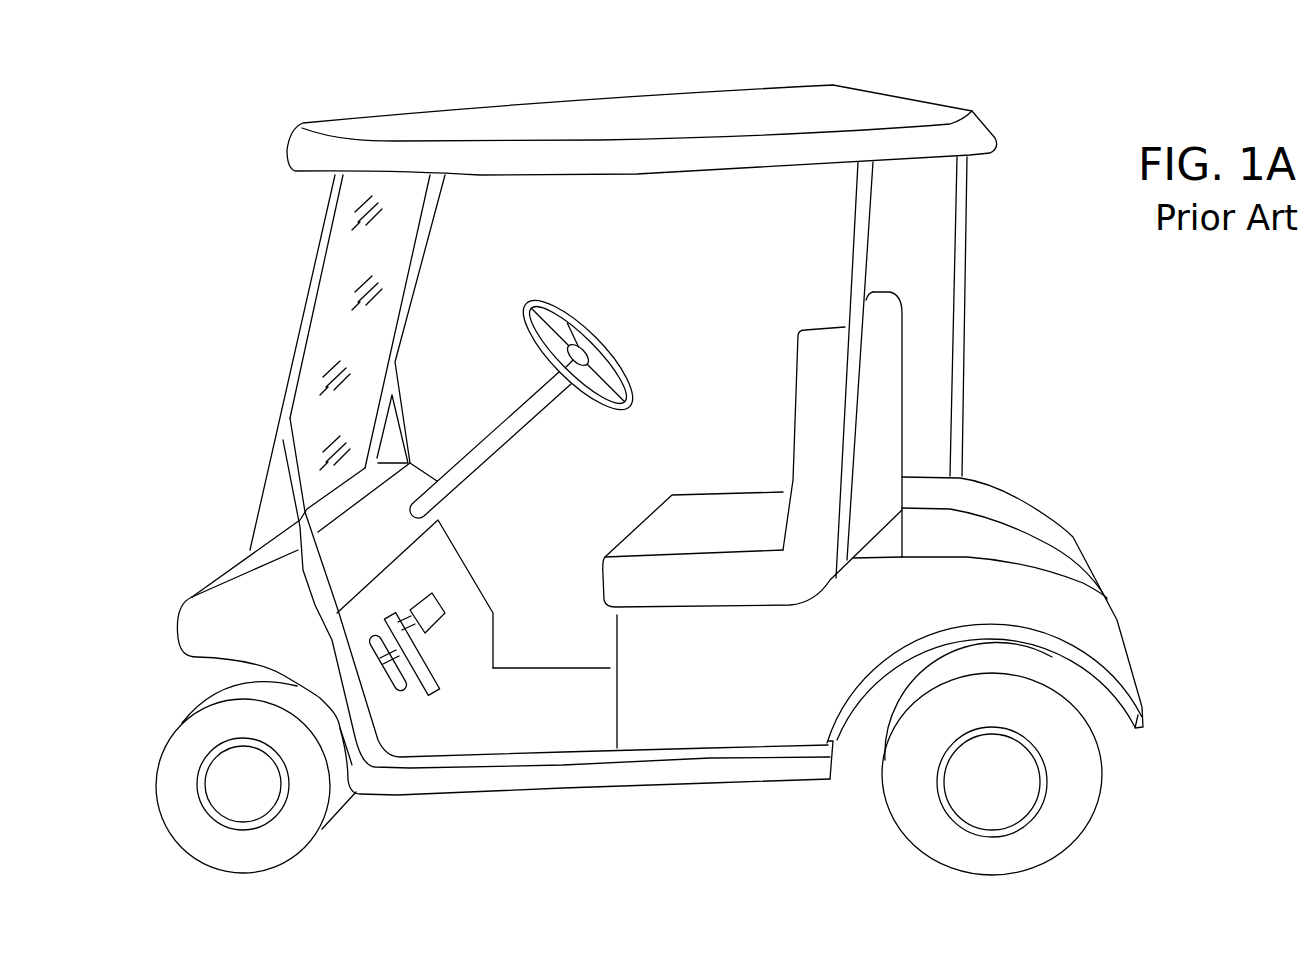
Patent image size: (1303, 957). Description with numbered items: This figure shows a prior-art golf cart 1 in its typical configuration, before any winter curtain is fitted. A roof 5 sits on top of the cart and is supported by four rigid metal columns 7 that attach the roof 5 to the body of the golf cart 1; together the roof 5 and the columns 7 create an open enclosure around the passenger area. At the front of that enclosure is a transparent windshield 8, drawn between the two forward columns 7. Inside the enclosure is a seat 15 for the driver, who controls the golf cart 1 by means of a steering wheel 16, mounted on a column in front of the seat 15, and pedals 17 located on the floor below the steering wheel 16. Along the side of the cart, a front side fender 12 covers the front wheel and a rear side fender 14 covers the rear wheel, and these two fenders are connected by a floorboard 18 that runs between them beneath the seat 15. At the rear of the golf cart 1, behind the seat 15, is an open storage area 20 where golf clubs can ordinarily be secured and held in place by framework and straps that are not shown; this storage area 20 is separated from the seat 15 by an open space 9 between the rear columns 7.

The golf cart 1 is at (262, 111).
The roof 5 is at (472, 133).
The rigid metal columns 7 is at (423, 222).
The transparent windshield 8 is at (343, 331).
The open space 9 is at (930, 400).
The front side fender 12 is at (220, 627).
The rear side fender 14 is at (992, 590).
The seat 15 is at (720, 583).
The steering wheel 16 is at (580, 320).
The pedals 17 is at (445, 613).
The floorboard 18 is at (575, 790).
The open storage area 20 is at (1020, 542).